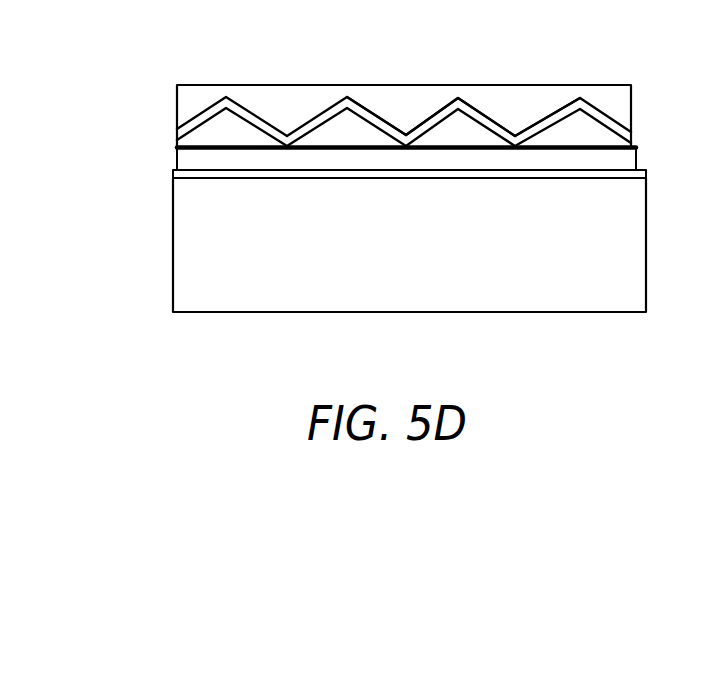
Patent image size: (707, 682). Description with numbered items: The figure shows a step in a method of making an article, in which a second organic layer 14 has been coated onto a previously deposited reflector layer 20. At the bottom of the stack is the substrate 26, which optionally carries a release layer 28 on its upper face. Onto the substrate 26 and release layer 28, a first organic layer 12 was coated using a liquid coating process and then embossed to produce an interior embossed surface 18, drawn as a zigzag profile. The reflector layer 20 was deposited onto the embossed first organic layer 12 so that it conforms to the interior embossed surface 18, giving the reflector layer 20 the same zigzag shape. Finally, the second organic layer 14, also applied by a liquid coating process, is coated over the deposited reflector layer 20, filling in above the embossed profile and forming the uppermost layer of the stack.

The first organic layer 12 is at (177, 152).
The second organic layer 14 is at (190, 99).
The interior embossed surface 18 is at (393, 120).
The reflector layer 20 is at (220, 133).
The substrate 26 is at (233, 233).
The release layer 28 is at (232, 157).